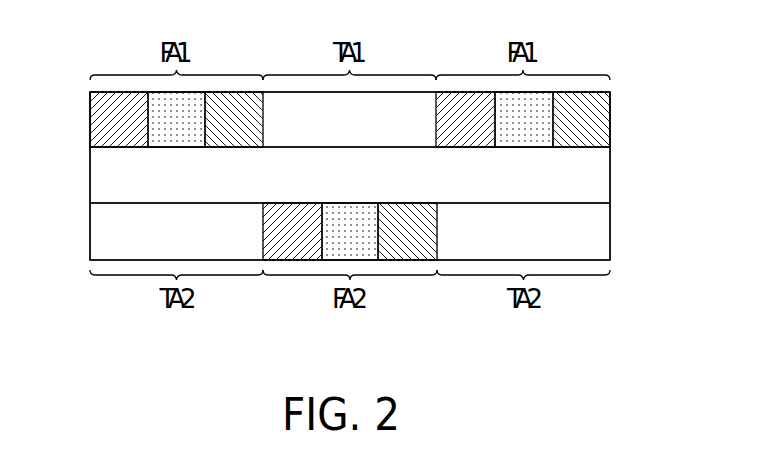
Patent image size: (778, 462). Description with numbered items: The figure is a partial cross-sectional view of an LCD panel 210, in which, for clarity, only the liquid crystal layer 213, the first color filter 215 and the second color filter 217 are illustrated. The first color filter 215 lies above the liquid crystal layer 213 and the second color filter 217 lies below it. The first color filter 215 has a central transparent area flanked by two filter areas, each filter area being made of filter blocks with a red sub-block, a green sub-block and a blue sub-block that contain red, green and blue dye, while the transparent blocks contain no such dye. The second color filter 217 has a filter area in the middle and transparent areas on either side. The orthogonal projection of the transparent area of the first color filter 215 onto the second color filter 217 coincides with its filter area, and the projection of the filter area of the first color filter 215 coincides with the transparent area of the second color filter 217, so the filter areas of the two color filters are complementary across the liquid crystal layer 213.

The LCD panel 210 is at (80, 92).
The liquid crystal layer 213 is at (590, 163).
The first color filter 215 is at (600, 121).
The second color filter 217 is at (598, 237).